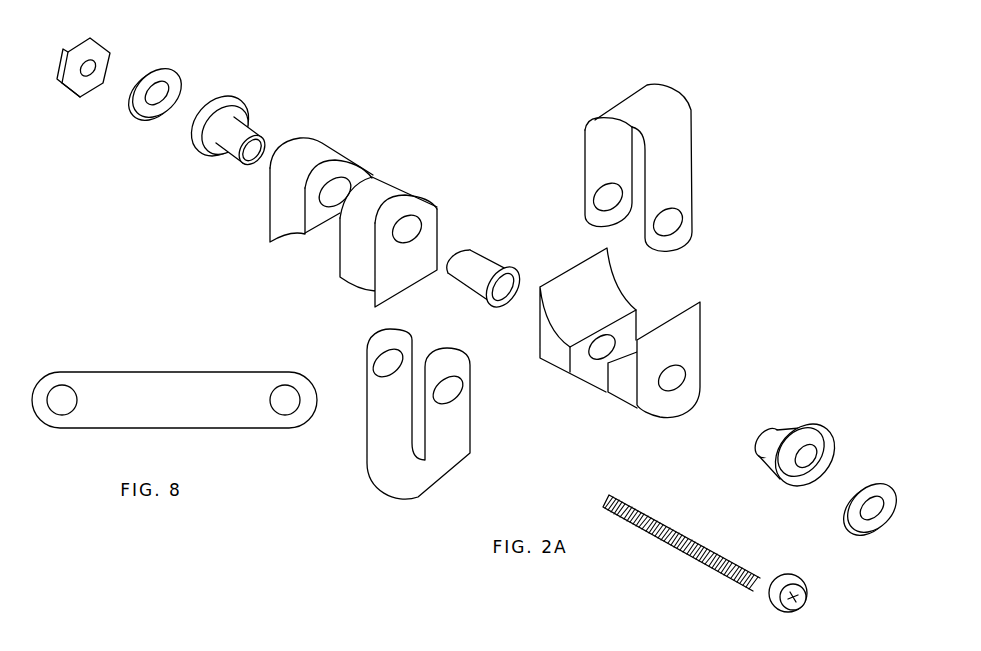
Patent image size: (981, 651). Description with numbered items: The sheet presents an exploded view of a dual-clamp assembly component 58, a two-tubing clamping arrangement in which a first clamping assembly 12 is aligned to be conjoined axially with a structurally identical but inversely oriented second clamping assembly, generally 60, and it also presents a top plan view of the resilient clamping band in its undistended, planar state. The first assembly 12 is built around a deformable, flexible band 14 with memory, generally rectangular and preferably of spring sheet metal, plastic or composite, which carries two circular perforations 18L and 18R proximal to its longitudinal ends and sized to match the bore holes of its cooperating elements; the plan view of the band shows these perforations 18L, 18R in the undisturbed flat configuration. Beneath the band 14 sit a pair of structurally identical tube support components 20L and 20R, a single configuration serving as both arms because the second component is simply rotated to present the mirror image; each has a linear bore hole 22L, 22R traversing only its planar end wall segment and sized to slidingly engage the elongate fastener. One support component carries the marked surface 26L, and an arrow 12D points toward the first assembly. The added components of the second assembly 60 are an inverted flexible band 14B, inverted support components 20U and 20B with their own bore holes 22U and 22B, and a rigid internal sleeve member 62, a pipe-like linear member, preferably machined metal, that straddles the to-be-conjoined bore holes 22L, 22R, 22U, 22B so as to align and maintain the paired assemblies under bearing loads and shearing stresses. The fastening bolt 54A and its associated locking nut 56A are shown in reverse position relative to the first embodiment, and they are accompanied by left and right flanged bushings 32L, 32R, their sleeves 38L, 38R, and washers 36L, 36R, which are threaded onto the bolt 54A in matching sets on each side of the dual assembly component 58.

In FIG. 2A, the first clamping assembly 12 is at (743, 253).
In FIG. 2A, the hinge assembly detail 12D is at (573, 211).
In FIG. 2A, the deformable flexible band 14 is at (673, 81).
In FIG. 8, the deformable flexible band 14 is at (174, 404).
In FIG. 2A, the inverted flexible band 14B is at (445, 485).
In FIG. 8, the left circular perforation 18L is at (70, 412).
In FIG. 8, the right circular perforation 18R is at (285, 405).
In FIG. 2A, the inverted upper support component 20U is at (341, 173).
In FIG. 2A, the inverted bottom support component 20B is at (410, 233).
In FIG. 2A, the left tube support component 20L is at (598, 322).
In FIG. 2A, the right tube support component 20R is at (677, 378).
In FIG. 2A, the linear bore hole of upper support component 22U is at (341, 172).
In FIG. 2A, the linear bore hole of bottom support component 22B is at (414, 232).
In FIG. 2A, the linear bore hole of left support component 22L is at (615, 340).
In FIG. 2A, the linear bore hole of right support component 22R is at (680, 378).
In FIG. 2A, the left block saddle surface 26L is at (574, 310).
In FIG. 2A, the left flanged bushing 32L is at (213, 145).
In FIG. 2A, the right flanged bushing 32R is at (786, 445).
In FIG. 2A, the left washer 36L is at (133, 107).
In FIG. 2A, the right washer 36R is at (893, 488).
In FIG. 2A, the left bushing sleeve 38L is at (233, 158).
In FIG. 2A, the right bushing sleeve 38R is at (757, 447).
In FIG. 2A, the fastening bolt 54A is at (655, 530).
In FIG. 2A, the locking nut 56A is at (64, 78).
In FIG. 2A, the dual-clamp assembly component 58 is at (494, 139).
In FIG. 2A, the second clamping assembly 60 is at (297, 269).
In FIG. 2A, the rigid internal sleeve member 62 is at (462, 287).